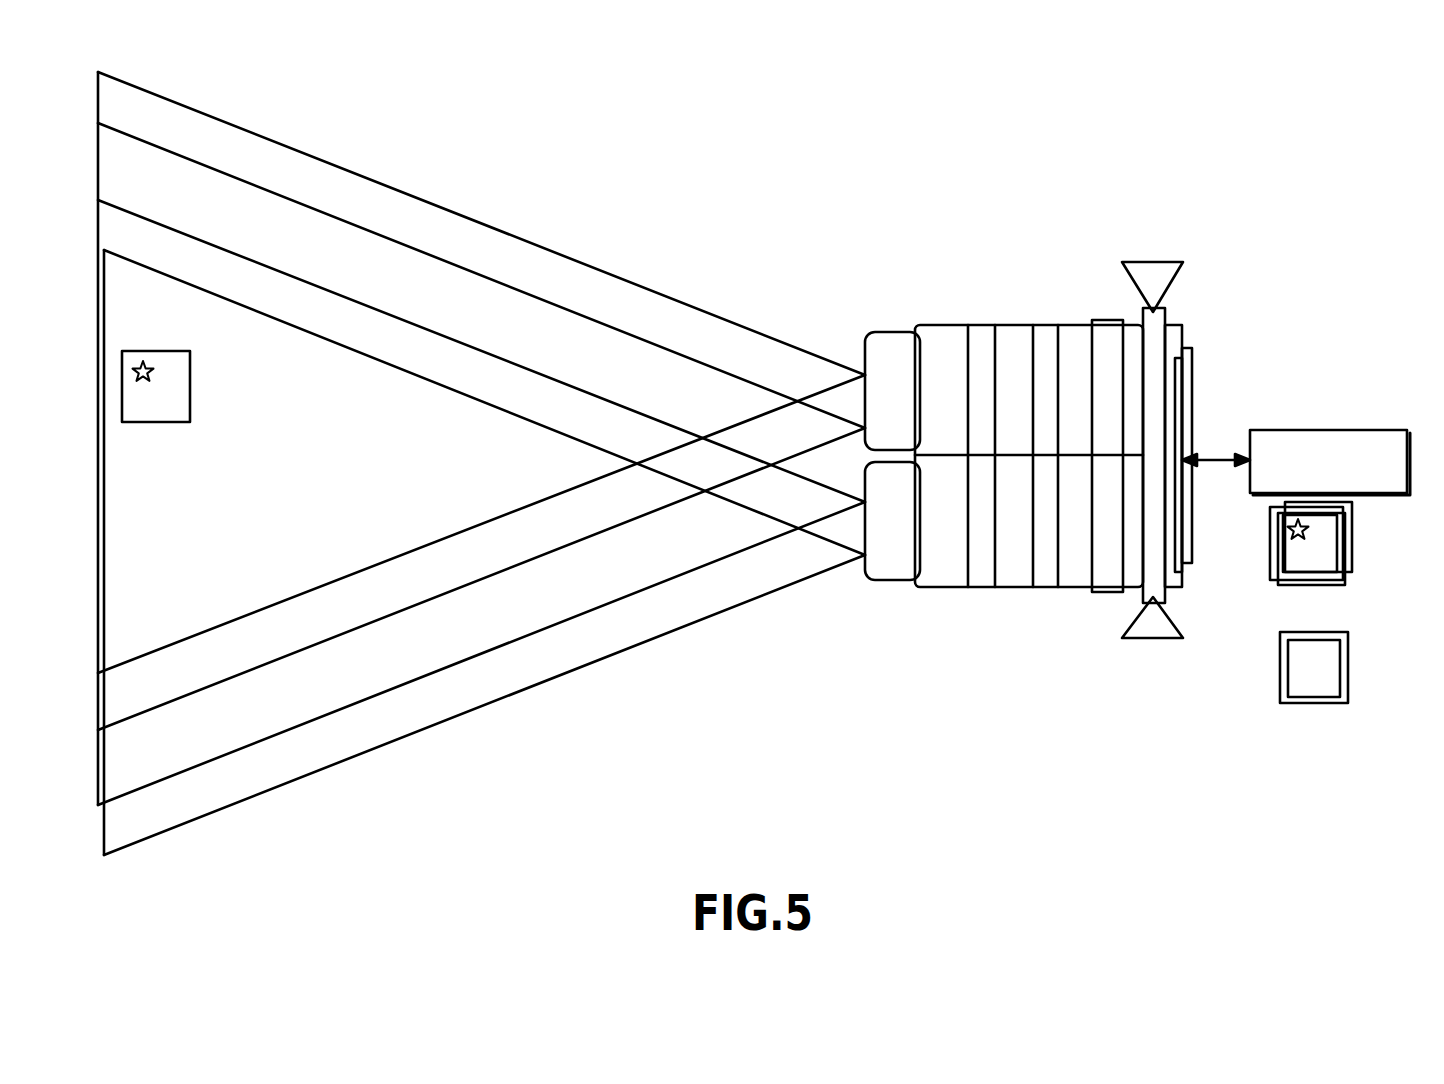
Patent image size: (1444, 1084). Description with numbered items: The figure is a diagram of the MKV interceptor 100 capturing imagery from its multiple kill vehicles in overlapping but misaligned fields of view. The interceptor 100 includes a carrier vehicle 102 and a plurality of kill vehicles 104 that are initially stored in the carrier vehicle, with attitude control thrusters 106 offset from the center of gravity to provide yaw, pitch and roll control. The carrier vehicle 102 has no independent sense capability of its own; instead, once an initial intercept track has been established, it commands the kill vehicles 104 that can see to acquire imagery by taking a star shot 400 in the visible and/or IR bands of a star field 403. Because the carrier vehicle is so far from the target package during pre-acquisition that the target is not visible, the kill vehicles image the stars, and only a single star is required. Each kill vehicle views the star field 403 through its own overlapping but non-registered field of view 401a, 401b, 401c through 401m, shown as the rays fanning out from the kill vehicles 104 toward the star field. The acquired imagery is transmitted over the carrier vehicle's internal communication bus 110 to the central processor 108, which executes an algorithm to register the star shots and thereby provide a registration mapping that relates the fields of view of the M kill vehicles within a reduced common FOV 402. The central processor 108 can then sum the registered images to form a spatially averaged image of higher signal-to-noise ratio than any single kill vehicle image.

The MKV interceptor 100 is at (806, 279).
The carrier vehicle 102 is at (1062, 688).
The kill vehicles 104 is at (928, 612).
The thrusters 106 is at (1167, 263).
The central processor 108 is at (1293, 430).
The internal communication bus 110 is at (1182, 395).
The star shot 400 is at (1352, 535).
The reduced common FOV 402 is at (1330, 703).
The star field 403 is at (190, 385).
The FOV 401a is at (415, 733).
The FOV 401b is at (297, 728).
The FOV 401c is at (275, 661).
The FOV 401m is at (215, 628).